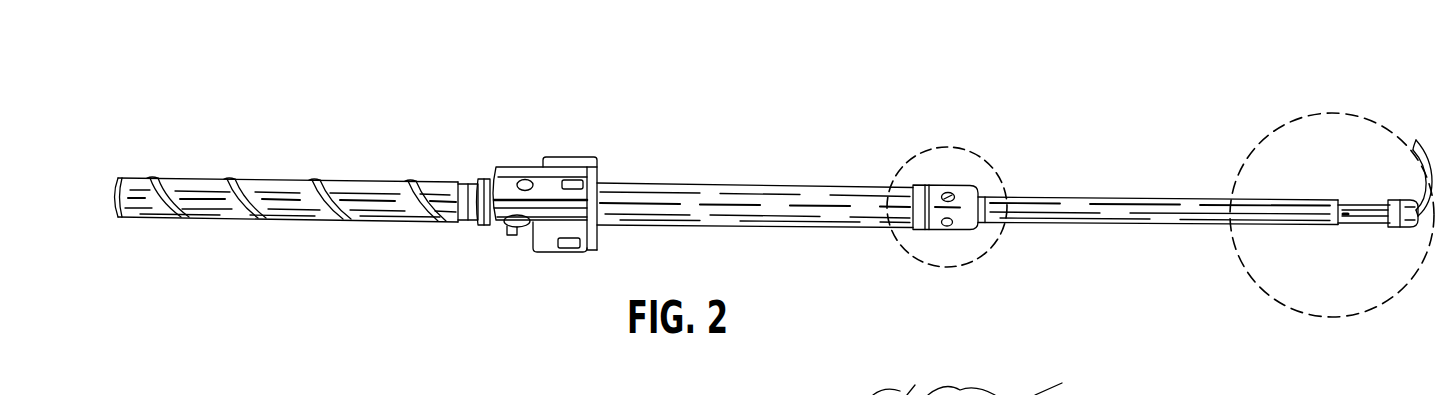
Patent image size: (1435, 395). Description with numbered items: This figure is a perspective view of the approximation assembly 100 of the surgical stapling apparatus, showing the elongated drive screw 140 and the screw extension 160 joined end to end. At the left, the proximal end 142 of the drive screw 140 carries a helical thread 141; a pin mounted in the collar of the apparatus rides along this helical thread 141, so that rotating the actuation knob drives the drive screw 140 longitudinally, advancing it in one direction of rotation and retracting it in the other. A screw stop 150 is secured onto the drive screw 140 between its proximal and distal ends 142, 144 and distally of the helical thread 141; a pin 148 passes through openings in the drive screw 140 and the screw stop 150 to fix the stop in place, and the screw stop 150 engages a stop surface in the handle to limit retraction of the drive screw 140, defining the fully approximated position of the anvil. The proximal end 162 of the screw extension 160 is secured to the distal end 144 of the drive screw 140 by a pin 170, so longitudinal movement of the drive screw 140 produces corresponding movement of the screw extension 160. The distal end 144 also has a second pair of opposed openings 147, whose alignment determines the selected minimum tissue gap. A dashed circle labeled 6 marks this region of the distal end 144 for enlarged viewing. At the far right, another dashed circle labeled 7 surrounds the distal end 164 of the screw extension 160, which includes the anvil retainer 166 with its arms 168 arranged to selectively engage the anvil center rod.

The approximation assembly 100 is at (764, 90).
The drive screw 140 is at (641, 175).
The helical thread 141 is at (226, 182).
The proximal end 142 is at (151, 232).
The distal end 144 is at (870, 230).
The second pair of opposed openings 147 is at (945, 194).
The pin 148 is at (967, 379).
The screw stop 150 is at (562, 144).
The screw extension 160 is at (1078, 188).
The proximal end 162 is at (993, 236).
The distal end 164 is at (1338, 226).
The anvil retainer 166 is at (1378, 190).
The arms 168 is at (1413, 166).
The pin 170 is at (947, 227).
The detail view circle FIG. 6 is at (897, 170).
The detail view circle FIG. 7 is at (1248, 152).